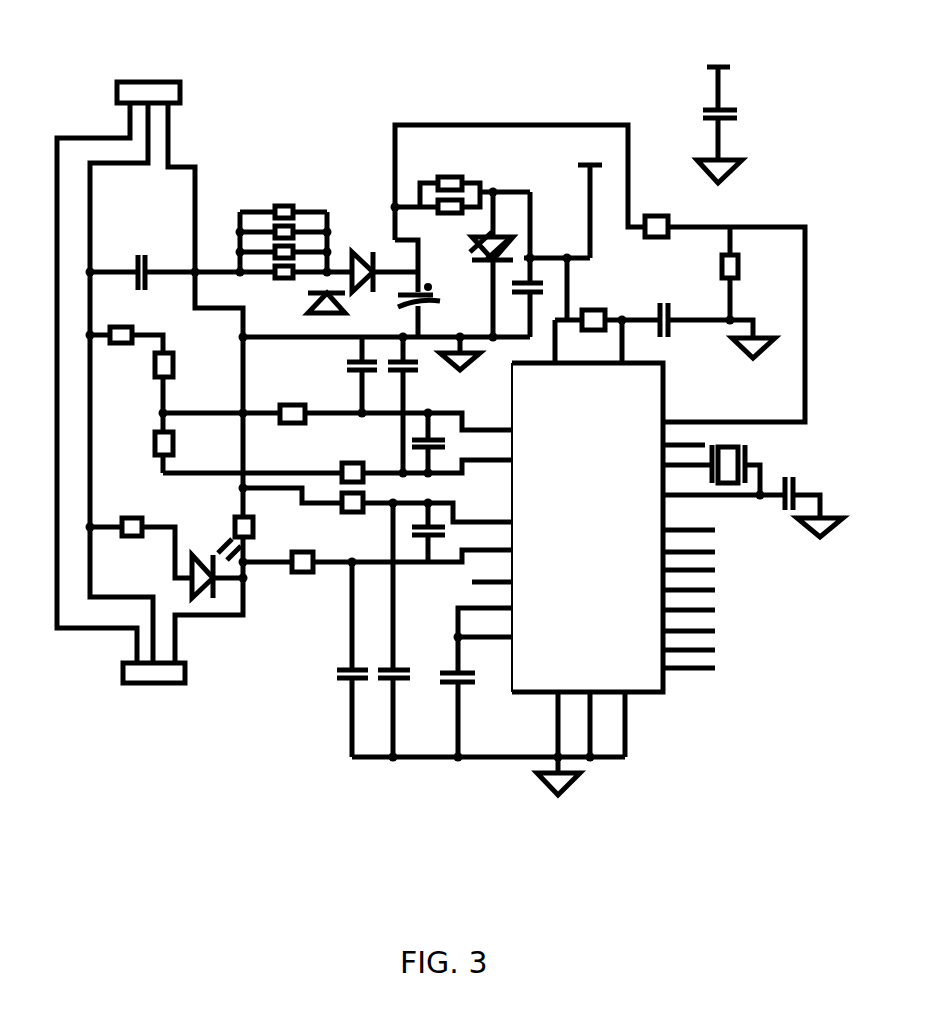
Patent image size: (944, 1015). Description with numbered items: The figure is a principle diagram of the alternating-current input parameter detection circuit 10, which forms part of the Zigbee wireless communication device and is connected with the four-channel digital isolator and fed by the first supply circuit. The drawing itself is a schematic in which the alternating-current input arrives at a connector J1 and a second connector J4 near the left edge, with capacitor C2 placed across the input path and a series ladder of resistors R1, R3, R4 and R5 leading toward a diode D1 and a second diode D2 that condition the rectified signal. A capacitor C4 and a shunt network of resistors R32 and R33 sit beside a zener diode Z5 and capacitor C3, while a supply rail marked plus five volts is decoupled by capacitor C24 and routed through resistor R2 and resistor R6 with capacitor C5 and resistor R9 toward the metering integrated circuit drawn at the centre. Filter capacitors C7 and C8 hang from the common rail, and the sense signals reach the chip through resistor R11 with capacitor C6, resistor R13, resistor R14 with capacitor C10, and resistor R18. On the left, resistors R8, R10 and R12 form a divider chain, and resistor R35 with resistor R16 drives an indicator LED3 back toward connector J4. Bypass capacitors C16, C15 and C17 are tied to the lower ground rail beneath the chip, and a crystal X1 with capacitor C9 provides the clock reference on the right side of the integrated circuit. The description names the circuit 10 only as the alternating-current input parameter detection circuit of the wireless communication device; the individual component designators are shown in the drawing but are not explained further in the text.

The alternating-current input parameter detection circuit 10 is at (320, 130).
The connector J1 is at (148, 85).
The connector J4 is at (154, 682).
The capacitor C2 is at (151, 271).
The resistor R1 is at (284, 205).
The resistor R3 is at (293, 229).
The resistor R4 is at (293, 249).
The resistor R5 is at (284, 281).
The diode D1 is at (373, 272).
The diode D2 is at (322, 309).
The capacitor C4 is at (425, 301).
The resistor R32 is at (450, 176).
The resistor R33 is at (450, 214).
The zener diode Z5 is at (491, 253).
The capacitor C3 is at (536, 289).
The capacitor C24 is at (732, 115).
The resistor R2 is at (656, 235).
The resistor R6 is at (741, 266).
The capacitor C5 is at (674, 313).
The resistor R9 is at (593, 328).
The capacitor C7 is at (357, 375).
The capacitor C8 is at (406, 375).
The resistor R11 is at (292, 408).
The capacitor C6 is at (431, 453).
The resistor R13 is at (353, 466).
The resistor R14 is at (353, 511).
The capacitor C10 is at (423, 538).
The resistor R18 is at (303, 569).
The resistor R8 is at (121, 327).
The resistor R10 is at (177, 365).
The resistor R12 is at (177, 443).
The resistor R35 is at (130, 520).
The resistor R16 is at (256, 527).
The light emitting diode LED3 is at (199, 570).
The capacitor C16 is at (345, 683).
The capacitor C15 is at (399, 683).
The capacitor C17 is at (465, 684).
The crystal X1 is at (726, 470).
The capacitor C9 is at (800, 493).